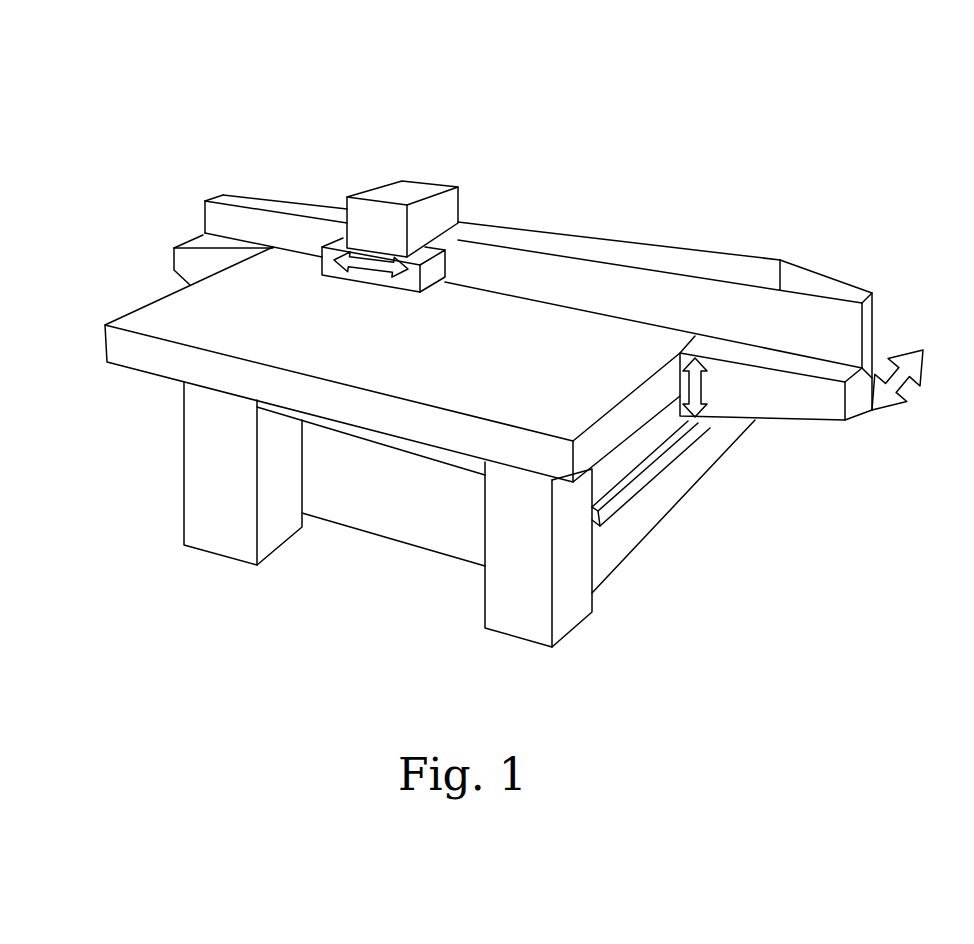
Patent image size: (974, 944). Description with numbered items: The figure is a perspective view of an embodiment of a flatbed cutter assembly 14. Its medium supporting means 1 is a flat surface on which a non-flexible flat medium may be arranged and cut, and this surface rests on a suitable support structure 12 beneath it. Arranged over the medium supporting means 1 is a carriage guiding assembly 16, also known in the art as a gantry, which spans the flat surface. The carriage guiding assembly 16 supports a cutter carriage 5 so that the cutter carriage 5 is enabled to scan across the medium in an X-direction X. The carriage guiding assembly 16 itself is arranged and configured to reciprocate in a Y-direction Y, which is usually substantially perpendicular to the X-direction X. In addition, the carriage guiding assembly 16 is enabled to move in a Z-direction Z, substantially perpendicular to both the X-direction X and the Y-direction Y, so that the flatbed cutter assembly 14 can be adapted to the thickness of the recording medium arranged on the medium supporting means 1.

The medium supporting means 1 is at (515, 323).
The cutter carriage 5 is at (421, 254).
The support structure 12 is at (573, 593).
The flatbed cutter assembly 14 is at (418, 143).
The carriage guiding assembly 16 is at (622, 285).
The X-direction X is at (357, 260).
The Y-direction Y is at (883, 398).
The Z-direction Z is at (695, 392).